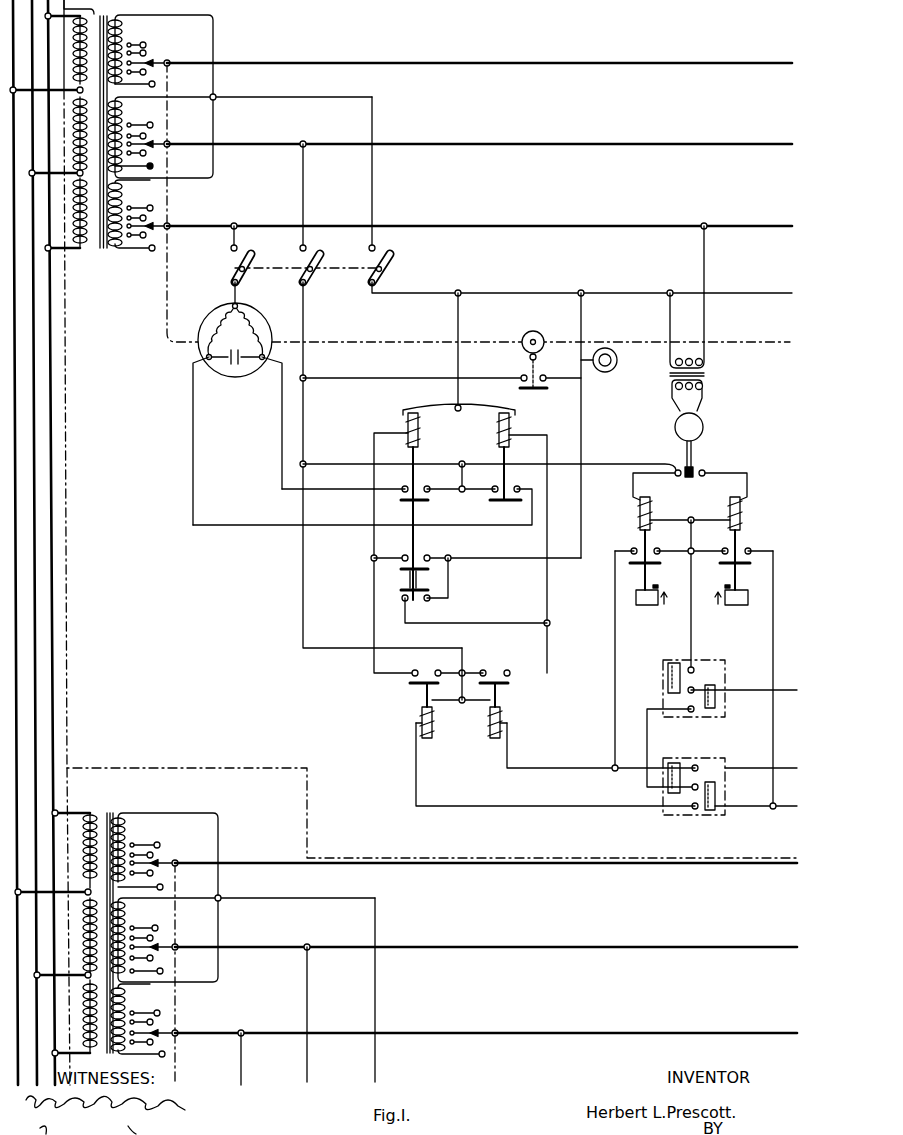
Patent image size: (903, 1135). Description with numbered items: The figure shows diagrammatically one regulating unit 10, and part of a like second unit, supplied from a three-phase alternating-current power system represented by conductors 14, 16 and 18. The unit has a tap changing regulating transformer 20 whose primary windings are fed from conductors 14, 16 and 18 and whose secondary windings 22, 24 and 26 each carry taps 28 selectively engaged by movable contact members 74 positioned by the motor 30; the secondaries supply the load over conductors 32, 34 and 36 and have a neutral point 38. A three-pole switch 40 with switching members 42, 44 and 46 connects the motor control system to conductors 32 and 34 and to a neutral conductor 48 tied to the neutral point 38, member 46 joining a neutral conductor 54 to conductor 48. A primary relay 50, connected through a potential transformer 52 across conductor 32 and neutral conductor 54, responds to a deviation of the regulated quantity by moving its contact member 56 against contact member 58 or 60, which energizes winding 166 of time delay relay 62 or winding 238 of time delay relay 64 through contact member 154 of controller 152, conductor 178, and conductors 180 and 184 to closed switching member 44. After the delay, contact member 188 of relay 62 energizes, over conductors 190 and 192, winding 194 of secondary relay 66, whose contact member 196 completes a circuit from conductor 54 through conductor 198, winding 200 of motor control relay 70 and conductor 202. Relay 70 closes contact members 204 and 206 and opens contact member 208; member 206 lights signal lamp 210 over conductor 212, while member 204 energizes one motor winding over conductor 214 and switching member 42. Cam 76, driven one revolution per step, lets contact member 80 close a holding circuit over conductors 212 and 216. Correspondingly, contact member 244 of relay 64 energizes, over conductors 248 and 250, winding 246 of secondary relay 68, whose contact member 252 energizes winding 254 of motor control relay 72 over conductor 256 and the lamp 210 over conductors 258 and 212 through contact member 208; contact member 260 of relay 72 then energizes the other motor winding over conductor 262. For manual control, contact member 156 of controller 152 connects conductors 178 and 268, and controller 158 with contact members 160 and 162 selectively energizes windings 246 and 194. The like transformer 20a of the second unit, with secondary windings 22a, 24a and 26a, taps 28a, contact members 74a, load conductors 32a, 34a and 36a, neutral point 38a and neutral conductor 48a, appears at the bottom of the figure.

The regulating unit 10 is at (208, 768).
The conductor 14 is at (15, 313).
The conductor 16 is at (34, 336).
The conductor 18 is at (51, 358).
The tap changing regulating transformer 20 is at (110, 275).
The secondary winding 22 is at (124, 193).
The secondary winding 24 is at (124, 110).
The secondary winding 26 is at (124, 28).
The taps 28 is at (146, 48).
The movable contact member 74 is at (154, 63).
The motor 30 is at (198, 352).
The load conductor 32 is at (460, 211).
The load conductor 34 is at (453, 128).
The load conductor 36 is at (447, 48).
The neutral point 38 is at (215, 97).
The three-pole switch 40 is at (326, 258).
The switching member 42 is at (251, 256).
The switching member 44 is at (320, 256).
The switching member 46 is at (389, 256).
The neutral conductor 48 is at (373, 190).
The primary relay 50 is at (665, 435).
The potential transformer 52 is at (657, 385).
The neutral conductor 54 is at (519, 278).
The movable contact member 56 is at (695, 467).
The contact member 58 is at (706, 471).
The contact member 60 is at (680, 476).
The time delay relay 62 is at (774, 532).
The time delay relay 64 is at (639, 537).
The secondary relay 66 is at (402, 726).
The secondary relay 68 is at (541, 726).
The motor control relay 70 is at (393, 429).
The motor control relay 72 is at (544, 429).
The cam member 76 is at (547, 328).
The contact member 80 is at (535, 390).
The controller 152 is at (690, 674).
The contact member 154 is at (667, 671).
The contact member 156 is at (716, 704).
The controller 158 is at (690, 779).
The contact member 160 is at (667, 790).
The contact member 162 is at (719, 793).
The energizing winding 166 is at (729, 499).
The conductor 178 is at (768, 700).
The conductor 180 is at (621, 447).
The conductor 184 is at (304, 407).
The contact member 188 is at (748, 561).
The conductor 190 is at (773, 662).
The conductor 192 is at (598, 817).
The energizing winding 194 is at (432, 722).
The movable contact member 196 is at (414, 684).
The conductor 198 is at (455, 372).
The energizing winding 200 is at (420, 425).
The conductor 202 is at (372, 544).
The contact member 204 is at (424, 504).
The contact member 206 is at (404, 570).
The contact member 208 is at (413, 602).
The signal lamp 210 is at (616, 358).
The conductor 212 is at (582, 500).
The conductor 214 is at (464, 475).
The conductor 216 is at (365, 368).
The winding 238 is at (641, 501).
The contact member 244 is at (656, 561).
The energizing winding 246 is at (502, 698).
The conductor 248 is at (614, 648).
The conductor 250 is at (568, 758).
The contact member 252 is at (492, 672).
The winding 254 is at (497, 430).
The conductor 256 is at (548, 537).
The conductor 258 is at (512, 610).
The contact member 260 is at (522, 504).
The conductor 262 is at (517, 532).
The conductor 268 is at (645, 718).
The tap changing regulating transformer 20a is at (117, 1066).
The secondary winding 22a is at (123, 996).
The secondary winding 24a is at (126, 911).
The secondary winding 26a is at (128, 827).
The taps 28a is at (160, 848).
The movable contact member 74a is at (165, 1033).
The load conductor 32a is at (492, 1017).
The load conductor 34a is at (517, 932).
The load conductor 36a is at (492, 871).
The neutral point 38a is at (220, 898).
The neutral conductor 48a is at (376, 1060).